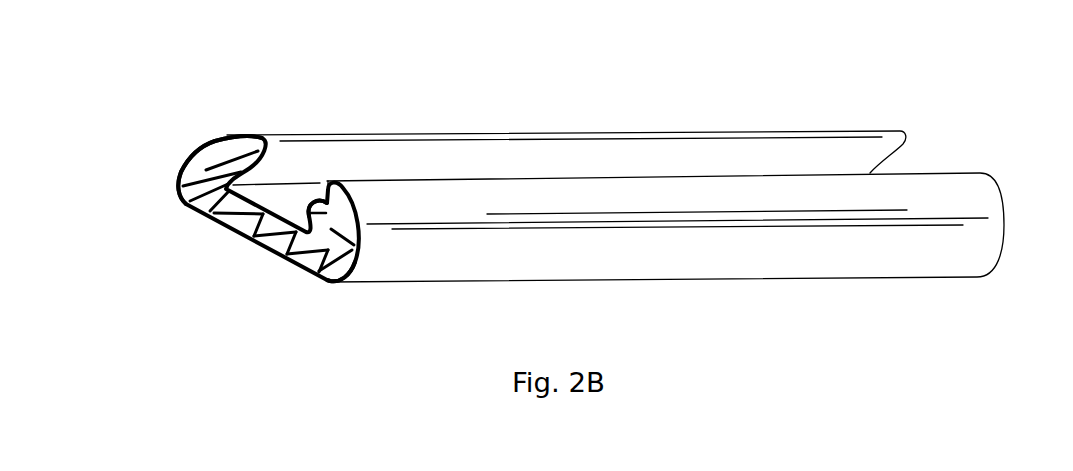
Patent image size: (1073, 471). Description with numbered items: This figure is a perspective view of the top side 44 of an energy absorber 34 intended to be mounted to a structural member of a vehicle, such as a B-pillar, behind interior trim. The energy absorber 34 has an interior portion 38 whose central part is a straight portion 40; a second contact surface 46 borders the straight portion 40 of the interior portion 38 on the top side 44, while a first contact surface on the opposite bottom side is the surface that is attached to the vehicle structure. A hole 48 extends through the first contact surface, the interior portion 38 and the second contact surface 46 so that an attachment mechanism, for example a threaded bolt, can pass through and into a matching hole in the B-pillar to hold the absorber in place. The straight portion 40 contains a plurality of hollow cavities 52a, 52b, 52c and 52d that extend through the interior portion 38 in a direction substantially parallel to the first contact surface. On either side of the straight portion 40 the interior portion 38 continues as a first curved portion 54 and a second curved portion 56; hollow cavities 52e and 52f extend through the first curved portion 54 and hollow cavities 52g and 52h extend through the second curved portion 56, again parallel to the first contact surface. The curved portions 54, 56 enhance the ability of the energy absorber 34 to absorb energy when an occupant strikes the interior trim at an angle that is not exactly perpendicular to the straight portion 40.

The energy absorber 34 is at (927, 122).
The top side 44 is at (967, 152).
The straight portion 40 is at (318, 292).
The interior portion 38 is at (253, 137).
The second contact surface 46 is at (271, 197).
The hole 48 is at (317, 198).
The hollow cavity 52a is at (187, 200).
The hollow cavity 52b is at (220, 232).
The hollow cavity 52c is at (273, 243).
The hollow cavity 52d is at (327, 281).
The hollow cavity 52e is at (217, 148).
The hollow cavity 52f is at (190, 163).
The hollow cavity 52g is at (340, 221).
The hollow cavity 52h is at (350, 262).
The first curved portion 54 is at (178, 185).
The second curved portion 56 is at (361, 279).